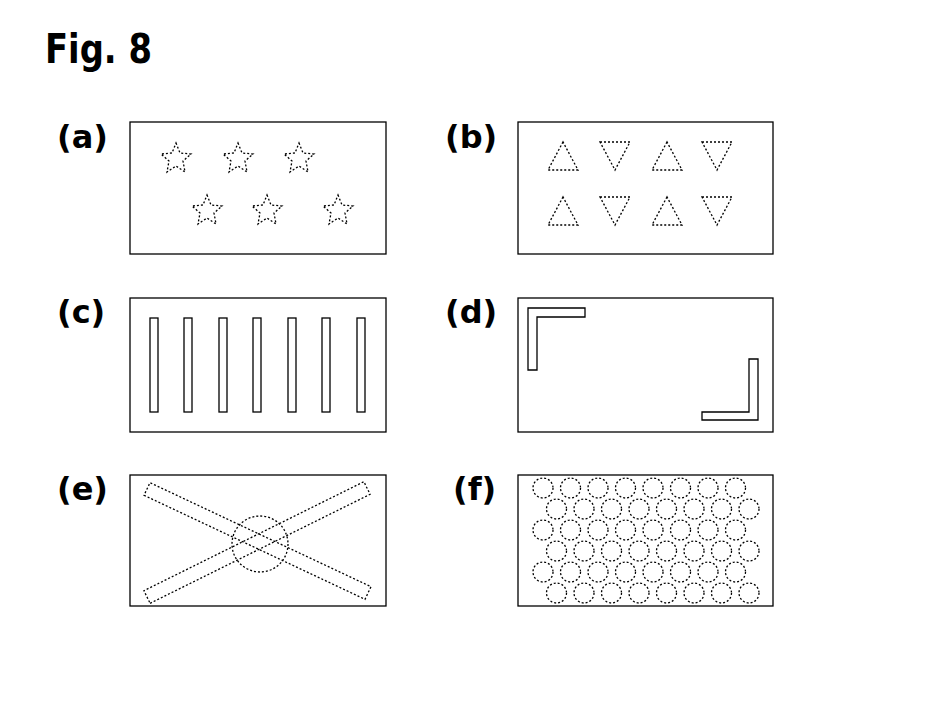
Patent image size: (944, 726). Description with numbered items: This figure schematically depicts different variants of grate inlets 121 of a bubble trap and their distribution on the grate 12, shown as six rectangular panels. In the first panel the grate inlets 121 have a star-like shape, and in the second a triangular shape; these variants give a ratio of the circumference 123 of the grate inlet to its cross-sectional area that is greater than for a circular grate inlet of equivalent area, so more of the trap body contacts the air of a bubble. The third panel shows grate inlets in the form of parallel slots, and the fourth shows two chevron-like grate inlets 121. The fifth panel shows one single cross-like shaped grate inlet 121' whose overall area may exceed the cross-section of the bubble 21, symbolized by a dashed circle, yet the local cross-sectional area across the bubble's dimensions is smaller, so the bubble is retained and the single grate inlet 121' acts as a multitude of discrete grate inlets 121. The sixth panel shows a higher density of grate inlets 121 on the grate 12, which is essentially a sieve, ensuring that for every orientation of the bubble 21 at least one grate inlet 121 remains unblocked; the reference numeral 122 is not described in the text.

The grate 12 is at (451, 357).
The grate inlet 121 is at (460, 378).
The single grate inlet 121' is at (209, 583).
The base region 122 is at (445, 367).
The circumference 123 is at (377, 315).
The bubble 21 is at (282, 600).